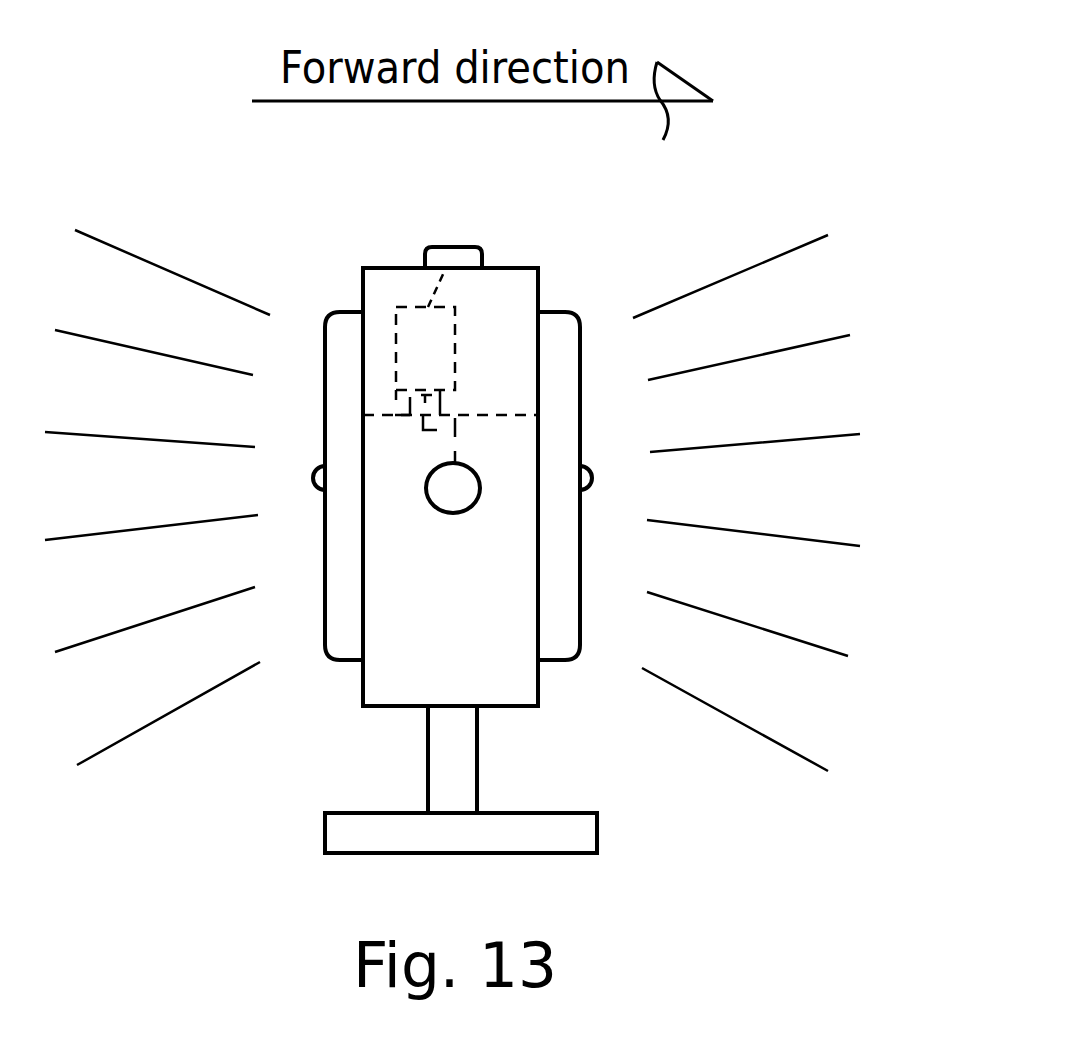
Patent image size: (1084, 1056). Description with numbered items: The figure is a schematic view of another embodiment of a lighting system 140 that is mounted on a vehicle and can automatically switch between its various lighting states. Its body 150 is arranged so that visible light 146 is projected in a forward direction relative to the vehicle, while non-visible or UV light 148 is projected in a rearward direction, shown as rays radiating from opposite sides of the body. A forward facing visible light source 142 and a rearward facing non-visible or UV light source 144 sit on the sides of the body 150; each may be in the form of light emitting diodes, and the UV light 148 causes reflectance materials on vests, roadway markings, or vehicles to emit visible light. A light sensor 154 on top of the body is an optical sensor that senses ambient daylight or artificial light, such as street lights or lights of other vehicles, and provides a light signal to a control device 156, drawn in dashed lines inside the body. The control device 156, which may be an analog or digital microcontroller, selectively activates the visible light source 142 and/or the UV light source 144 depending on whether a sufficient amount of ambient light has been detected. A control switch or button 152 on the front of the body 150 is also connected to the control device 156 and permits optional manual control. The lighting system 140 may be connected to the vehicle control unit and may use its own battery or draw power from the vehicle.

The lighting system 140 is at (205, 203).
The forward facing visible light source 142 is at (583, 665).
The rearward facing non-visible or UV light source 144 is at (332, 663).
The visible light 146 is at (792, 517).
The non-visible or UV light 148 is at (165, 507).
The body 150 is at (360, 710).
The control switch or button 152 is at (480, 497).
The light sensor 154 is at (470, 250).
The control device 156 is at (407, 305).